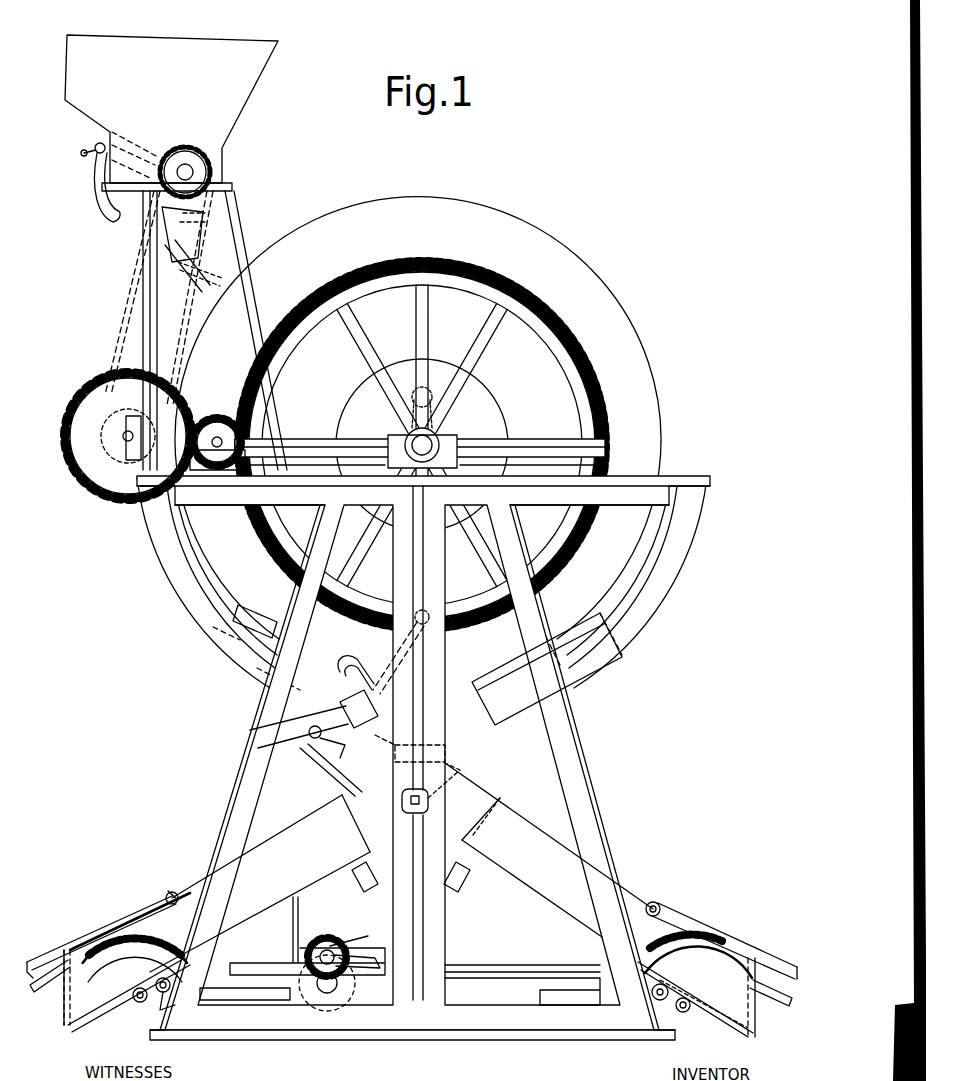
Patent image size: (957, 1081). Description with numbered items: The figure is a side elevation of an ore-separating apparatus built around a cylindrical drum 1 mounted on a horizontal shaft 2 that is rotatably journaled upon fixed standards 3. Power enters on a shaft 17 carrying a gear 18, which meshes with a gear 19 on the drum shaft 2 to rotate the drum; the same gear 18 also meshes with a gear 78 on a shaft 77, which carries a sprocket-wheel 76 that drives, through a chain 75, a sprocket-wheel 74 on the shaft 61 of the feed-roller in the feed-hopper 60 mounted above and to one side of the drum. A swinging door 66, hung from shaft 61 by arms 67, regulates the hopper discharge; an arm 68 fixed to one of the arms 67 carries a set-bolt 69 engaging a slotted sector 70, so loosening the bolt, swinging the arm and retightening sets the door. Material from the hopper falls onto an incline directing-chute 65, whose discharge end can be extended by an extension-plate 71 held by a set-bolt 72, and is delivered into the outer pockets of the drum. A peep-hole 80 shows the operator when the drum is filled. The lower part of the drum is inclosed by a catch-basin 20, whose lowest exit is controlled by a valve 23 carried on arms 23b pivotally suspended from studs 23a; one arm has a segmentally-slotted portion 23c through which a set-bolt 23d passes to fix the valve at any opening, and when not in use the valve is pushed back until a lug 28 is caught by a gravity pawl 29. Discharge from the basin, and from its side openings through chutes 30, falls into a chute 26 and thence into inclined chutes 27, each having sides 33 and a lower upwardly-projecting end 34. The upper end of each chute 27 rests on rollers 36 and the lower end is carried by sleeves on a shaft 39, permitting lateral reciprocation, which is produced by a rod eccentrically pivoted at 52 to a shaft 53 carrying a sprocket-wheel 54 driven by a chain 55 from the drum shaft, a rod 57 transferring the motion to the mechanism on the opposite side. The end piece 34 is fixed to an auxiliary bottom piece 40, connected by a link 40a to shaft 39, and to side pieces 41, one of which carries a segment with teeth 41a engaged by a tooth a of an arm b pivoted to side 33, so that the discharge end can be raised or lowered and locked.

The cylindrical drum 1 is at (422, 445).
The horizontal shaft 2 is at (440, 441).
The fixed standards 3 is at (232, 811).
The shaft 17 is at (217, 450).
The gear 18 is at (222, 420).
The gear 19 is at (607, 430).
The catch-basin 20 is at (422, 583).
The valve 23 is at (385, 743).
The studs 23a is at (455, 629).
The arms 23b is at (400, 652).
The segmentally-slotted portion 23c is at (346, 668).
The set-bolt 23d is at (372, 699).
The chute 26 is at (436, 788).
The inclined chutes 27 is at (401, 867).
The lug or projection 28 is at (300, 728).
The gravity catch or pawl 29 is at (300, 760).
The chutes 30 is at (348, 712).
The sides 33 is at (411, 829).
The lower upwardly-projecting end 34 is at (64, 1005).
The rollers 36 is at (362, 882).
The shaft or rod 39 is at (165, 1025).
The auxiliary bottom piece 40 is at (95, 1008).
The link 40a is at (150, 1000).
The side pieces 41 is at (411, 938).
The teeth 41a is at (148, 930).
The eccentric pivot 52 is at (322, 940).
The shaft 53 is at (332, 992).
The sprocket-wheel 54 is at (340, 940).
The chain 55 is at (292, 931).
The rod 57 is at (480, 968).
The feed-hopper 60 is at (171, 113).
The shaft 61 is at (186, 164).
The incline directing-chute 65 is at (172, 228).
The swinging door or valve 66 is at (200, 224).
The arms 67 is at (190, 204).
The arm 68 is at (126, 152).
The set-bolt 69 is at (97, 143).
The slotted sector 70 is at (102, 203).
The extension-plate 71 is at (215, 257).
The set-bolt 72 is at (185, 292).
The sprocket-wheel 74 is at (210, 166).
The chain 75 is at (185, 292).
The sprocket-wheel 76 is at (116, 412).
The shaft 77 is at (122, 436).
The gear 78 is at (78, 466).
The peep-hole 80 is at (422, 388).
The tooth a is at (110, 893).
The arm b is at (45, 962).